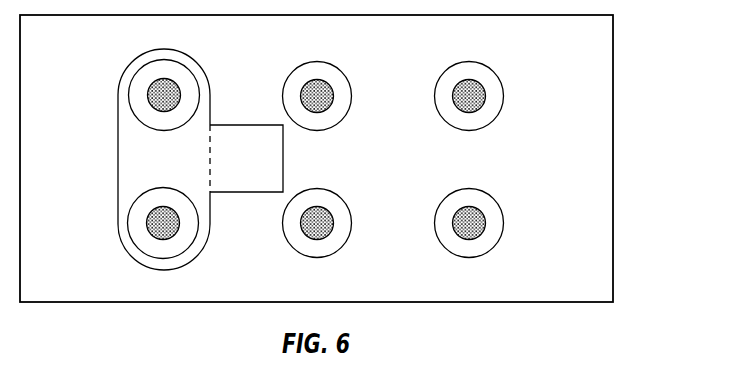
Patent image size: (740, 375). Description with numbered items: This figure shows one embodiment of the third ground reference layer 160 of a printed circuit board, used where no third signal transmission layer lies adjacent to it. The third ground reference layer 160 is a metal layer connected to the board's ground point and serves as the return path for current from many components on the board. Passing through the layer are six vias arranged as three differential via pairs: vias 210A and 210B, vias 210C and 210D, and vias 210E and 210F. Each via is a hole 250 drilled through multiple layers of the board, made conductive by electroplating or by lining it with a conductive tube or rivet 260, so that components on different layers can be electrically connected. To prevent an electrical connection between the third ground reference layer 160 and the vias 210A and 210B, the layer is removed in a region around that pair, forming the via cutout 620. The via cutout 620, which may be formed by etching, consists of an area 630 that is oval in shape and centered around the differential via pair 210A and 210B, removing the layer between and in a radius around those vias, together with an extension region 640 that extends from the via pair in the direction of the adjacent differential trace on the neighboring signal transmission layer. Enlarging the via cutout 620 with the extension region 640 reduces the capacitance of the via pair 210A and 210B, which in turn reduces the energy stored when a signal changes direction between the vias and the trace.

The third ground reference layer 160 is at (636, 160).
The via 210A is at (199, 78).
The via 210B is at (199, 242).
The via 210C is at (318, 62).
The via 210D is at (315, 257).
The via 210E is at (470, 62).
The via 210F is at (467, 257).
The hole 250 is at (181, 94).
The conductive tube or rivet 260 is at (195, 238).
The via cutout 620 is at (210, 125).
The area 630 is at (183, 171).
The extension region 640 is at (266, 171).